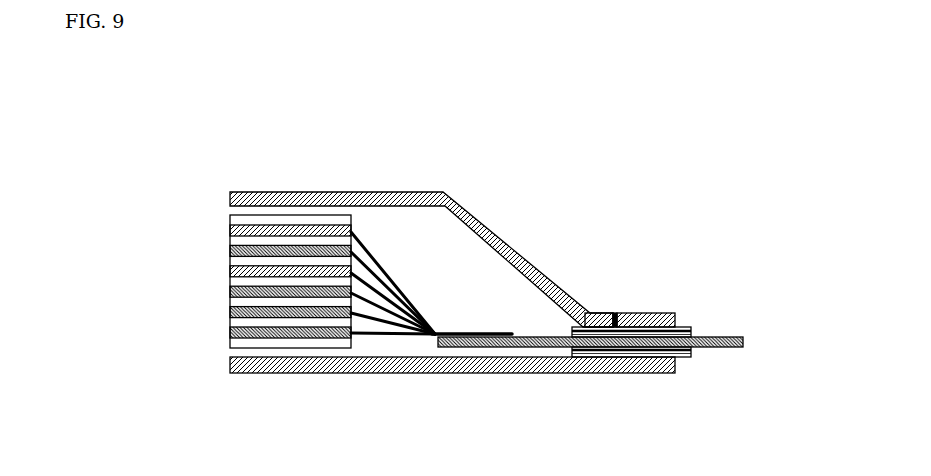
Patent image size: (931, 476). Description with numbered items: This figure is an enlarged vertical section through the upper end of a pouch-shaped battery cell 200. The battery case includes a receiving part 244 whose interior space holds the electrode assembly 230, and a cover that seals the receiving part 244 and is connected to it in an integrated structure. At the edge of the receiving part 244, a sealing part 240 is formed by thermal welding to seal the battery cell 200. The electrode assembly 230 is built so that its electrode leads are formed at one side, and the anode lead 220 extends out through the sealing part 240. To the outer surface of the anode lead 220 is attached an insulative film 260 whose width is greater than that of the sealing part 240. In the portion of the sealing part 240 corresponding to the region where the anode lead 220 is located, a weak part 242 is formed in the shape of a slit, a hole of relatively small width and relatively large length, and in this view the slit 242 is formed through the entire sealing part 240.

The battery cell 200 is at (143, 83).
The anode lead 220 is at (744, 346).
The electrode assembly 230 is at (220, 221).
The sealing part 240 is at (675, 389).
The weak part 242 is at (617, 313).
The receiving part 244 is at (288, 192).
The insulative film 260 is at (684, 327).